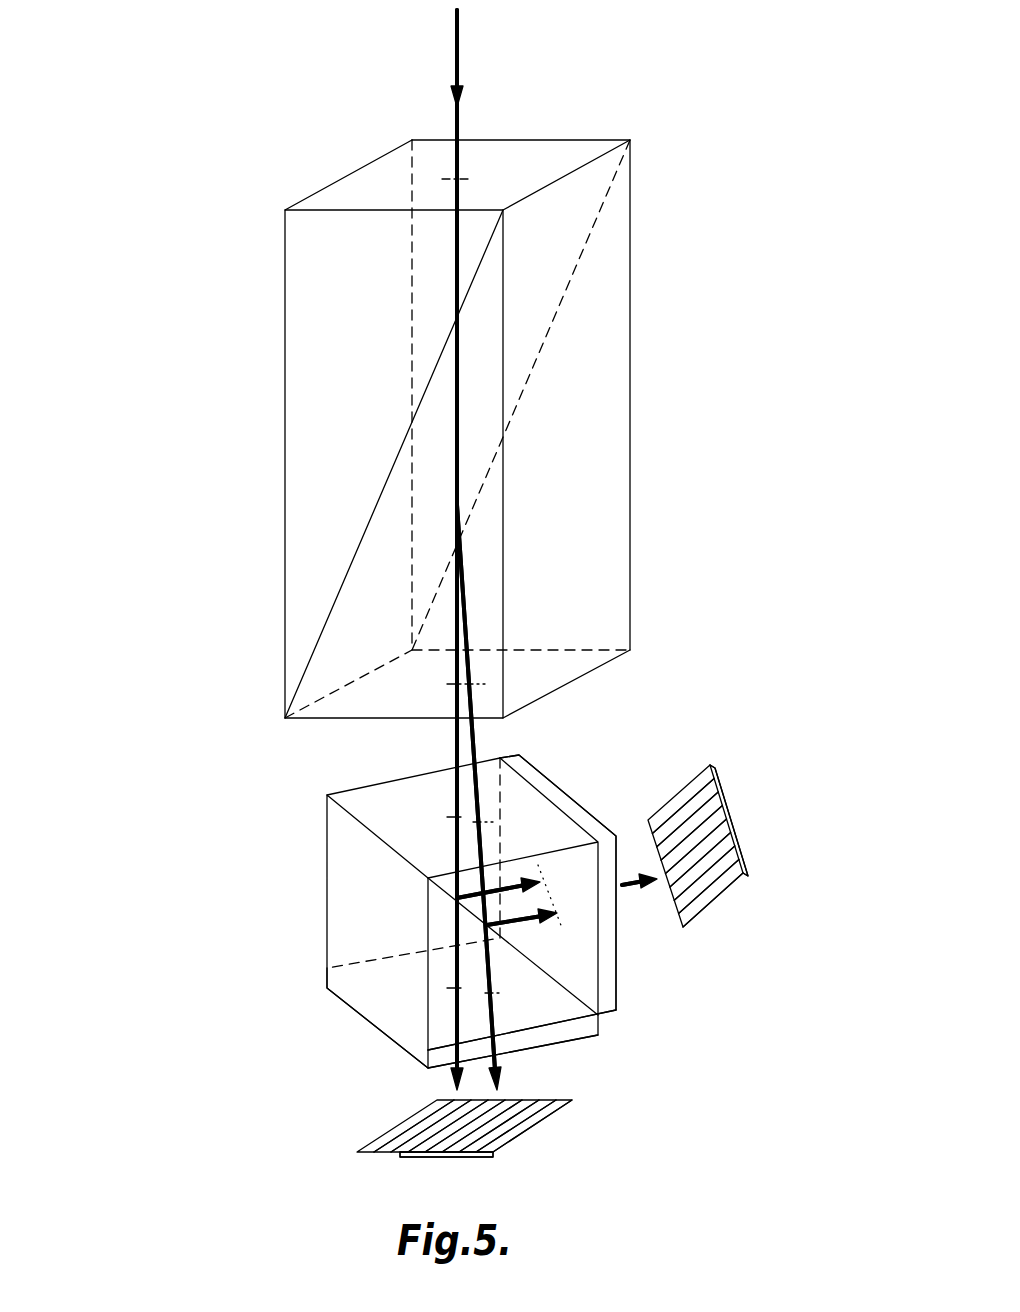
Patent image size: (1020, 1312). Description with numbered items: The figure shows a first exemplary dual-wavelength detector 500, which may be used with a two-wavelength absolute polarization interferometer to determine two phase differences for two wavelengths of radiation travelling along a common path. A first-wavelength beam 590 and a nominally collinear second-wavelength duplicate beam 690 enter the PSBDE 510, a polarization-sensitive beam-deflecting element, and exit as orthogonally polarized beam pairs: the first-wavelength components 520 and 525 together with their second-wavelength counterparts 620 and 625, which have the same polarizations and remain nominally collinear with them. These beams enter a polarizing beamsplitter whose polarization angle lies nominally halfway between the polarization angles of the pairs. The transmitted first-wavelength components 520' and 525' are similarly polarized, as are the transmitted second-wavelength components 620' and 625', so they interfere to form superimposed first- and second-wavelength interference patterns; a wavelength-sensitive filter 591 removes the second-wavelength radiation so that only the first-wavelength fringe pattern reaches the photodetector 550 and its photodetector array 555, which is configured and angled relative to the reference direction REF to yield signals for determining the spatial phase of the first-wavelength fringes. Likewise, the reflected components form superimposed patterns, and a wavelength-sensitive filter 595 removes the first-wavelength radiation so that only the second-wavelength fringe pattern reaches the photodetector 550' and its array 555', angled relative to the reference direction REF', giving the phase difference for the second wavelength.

The dual-wavelength detector 500 is at (178, 118).
The PSBDE 510 is at (630, 140).
The beam 590 is at (460, 34).
The beam 690 is at (460, 34).
The beam 520 is at (368, 610).
The second wavelength component 620 is at (368, 610).
The beam 525 is at (593, 705).
The second wavelength component 625 is at (593, 705).
The wavelength-sensitive filter 595 is at (550, 780).
The wavelength-sensitive filter 591 is at (325, 972).
The first-wavelength component 520' is at (345, 997).
The second-wavelength component 620' is at (342, 985).
The first-wavelength component 525' is at (616, 997).
The second-wavelength component 625' is at (616, 987).
The photodetector 550 is at (404, 1122).
The photodetector array 555 is at (424, 1112).
The photodetector 550' is at (713, 826).
The photodetector array 555' is at (727, 837).
The reference direction REF is at (446, 1176).
The reference direction REF' is at (760, 820).